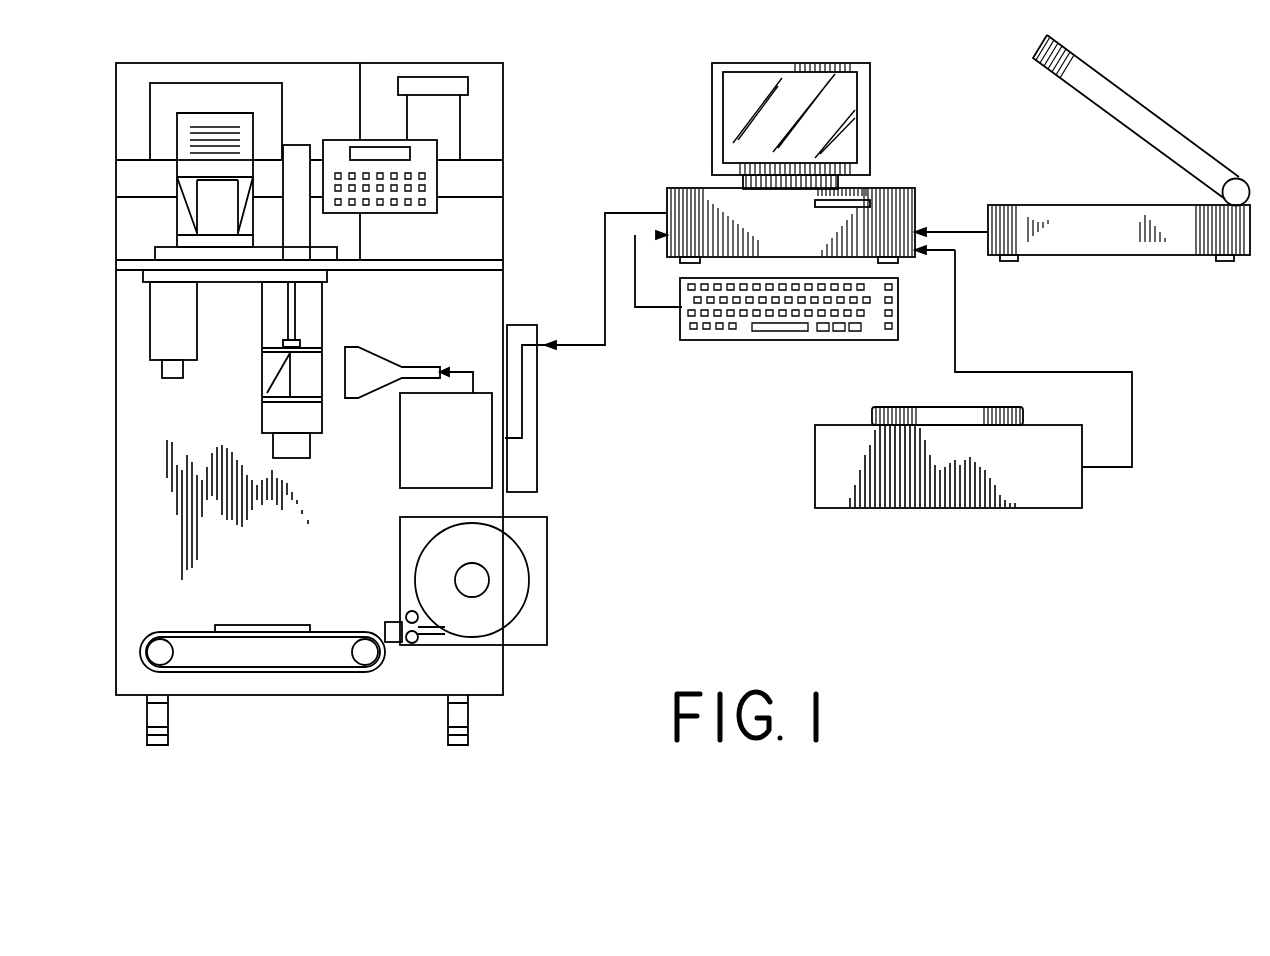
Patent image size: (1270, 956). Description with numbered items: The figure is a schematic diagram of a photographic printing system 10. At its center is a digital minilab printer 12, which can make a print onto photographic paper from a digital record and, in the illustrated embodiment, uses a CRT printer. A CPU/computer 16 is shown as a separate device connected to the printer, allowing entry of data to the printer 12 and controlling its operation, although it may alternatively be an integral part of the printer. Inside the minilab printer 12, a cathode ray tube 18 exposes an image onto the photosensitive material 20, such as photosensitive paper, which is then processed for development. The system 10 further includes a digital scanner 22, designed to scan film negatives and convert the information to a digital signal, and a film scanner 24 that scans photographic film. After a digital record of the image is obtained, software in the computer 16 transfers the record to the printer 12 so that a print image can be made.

The photographic printing system 10 is at (803, 577).
The digital minilab printer 12 is at (388, 63).
The CPU/computer 16 is at (785, 63).
The cathode ray tube 18 is at (352, 398).
The photosensitive material 20 is at (292, 626).
The digital scanner 22 is at (1093, 256).
The film scanner 24 is at (1027, 510).